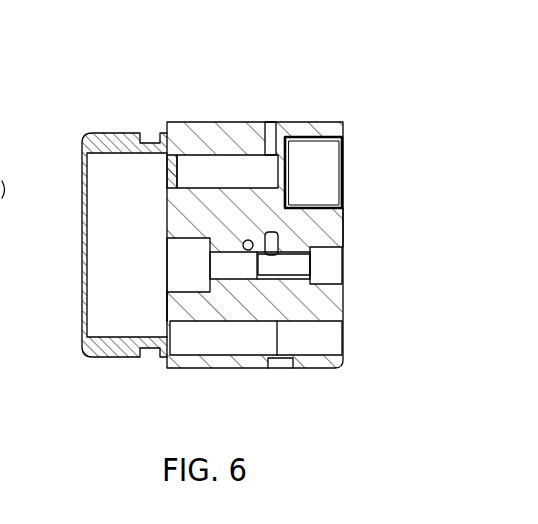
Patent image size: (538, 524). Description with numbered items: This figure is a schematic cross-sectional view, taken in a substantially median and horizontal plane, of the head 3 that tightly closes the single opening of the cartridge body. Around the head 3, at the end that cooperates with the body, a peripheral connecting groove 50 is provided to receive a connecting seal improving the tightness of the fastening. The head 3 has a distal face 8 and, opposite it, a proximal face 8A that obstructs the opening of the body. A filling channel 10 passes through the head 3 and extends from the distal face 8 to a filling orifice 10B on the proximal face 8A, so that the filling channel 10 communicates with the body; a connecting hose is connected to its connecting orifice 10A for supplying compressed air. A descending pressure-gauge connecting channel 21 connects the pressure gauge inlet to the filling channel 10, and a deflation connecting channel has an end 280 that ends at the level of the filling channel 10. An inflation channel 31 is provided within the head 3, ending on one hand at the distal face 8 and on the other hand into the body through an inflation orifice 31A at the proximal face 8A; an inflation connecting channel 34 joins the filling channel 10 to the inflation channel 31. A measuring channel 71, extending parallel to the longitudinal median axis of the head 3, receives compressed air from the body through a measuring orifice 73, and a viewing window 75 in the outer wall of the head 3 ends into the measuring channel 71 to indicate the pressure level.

The head 3 is at (247, 135).
The peripheral connecting groove 50 is at (148, 128).
The pressure-gauge connecting channel 21 is at (232, 237).
The end of deflation connecting channel 280 is at (272, 231).
The filling channel 10 is at (318, 173).
The connecting orifice 10A is at (342, 158).
The filling orifice 10B is at (167, 177).
The distal face 8 is at (342, 222).
The inflation connecting channel 34 is at (286, 232).
The inflation channel 31 is at (326, 264).
The inflation orifice 31A is at (167, 265).
The measuring orifice 73 is at (158, 333).
The proximal face 8A is at (167, 308).
The measuring channel 71 is at (324, 337).
The viewing window 75 is at (289, 378).